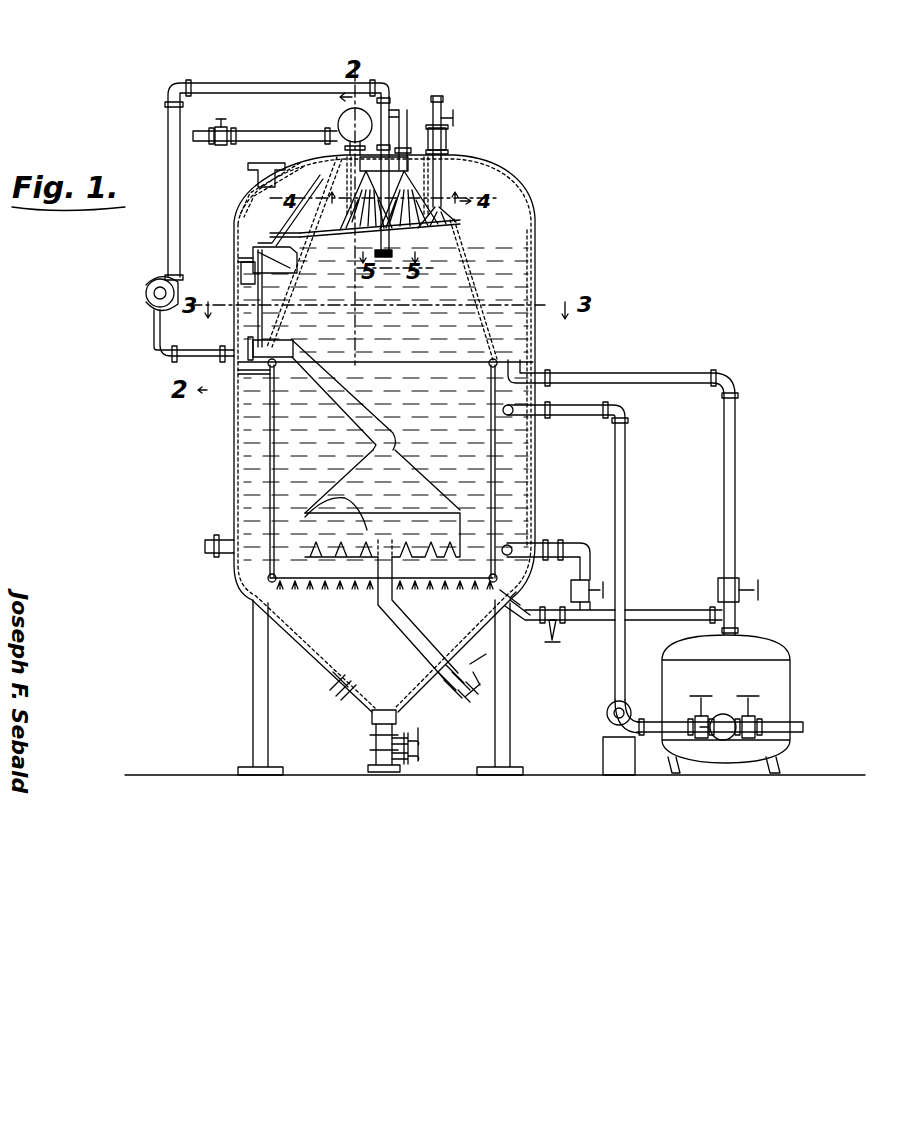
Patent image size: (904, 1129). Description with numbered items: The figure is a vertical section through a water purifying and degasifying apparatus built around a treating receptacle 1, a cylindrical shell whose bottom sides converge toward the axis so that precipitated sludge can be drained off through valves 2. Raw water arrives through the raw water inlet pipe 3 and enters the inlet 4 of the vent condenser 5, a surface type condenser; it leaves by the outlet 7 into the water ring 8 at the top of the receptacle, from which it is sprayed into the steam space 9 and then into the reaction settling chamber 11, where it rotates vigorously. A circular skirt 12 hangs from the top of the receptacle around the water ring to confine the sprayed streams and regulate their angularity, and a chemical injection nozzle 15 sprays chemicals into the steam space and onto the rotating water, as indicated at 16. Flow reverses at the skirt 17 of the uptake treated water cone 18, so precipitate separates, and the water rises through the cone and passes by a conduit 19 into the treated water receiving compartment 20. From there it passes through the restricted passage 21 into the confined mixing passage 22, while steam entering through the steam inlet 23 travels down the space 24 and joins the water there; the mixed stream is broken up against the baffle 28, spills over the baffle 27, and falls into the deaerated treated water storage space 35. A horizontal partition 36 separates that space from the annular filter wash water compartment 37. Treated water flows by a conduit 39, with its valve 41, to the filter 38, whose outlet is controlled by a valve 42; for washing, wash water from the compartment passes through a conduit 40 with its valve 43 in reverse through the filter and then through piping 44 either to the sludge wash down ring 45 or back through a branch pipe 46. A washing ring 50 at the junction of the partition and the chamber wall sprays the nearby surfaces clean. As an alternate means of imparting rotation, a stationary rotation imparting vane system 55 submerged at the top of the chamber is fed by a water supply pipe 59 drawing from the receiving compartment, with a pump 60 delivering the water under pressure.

The treating receptacle 1 is at (222, 524).
The valves 2 is at (372, 740).
The raw water inlet pipe 3 is at (281, 131).
The inlet 4 is at (340, 142).
The vent condenser 5 is at (364, 113).
The outlet 7 is at (390, 108).
The water ring 8 is at (405, 140).
The steam space 9 is at (473, 188).
The reaction settling chamber 11 is at (470, 257).
The circular skirt 12 is at (432, 185).
The chemical injection nozzle 15 is at (448, 136).
The chemical spray 16 is at (447, 227).
The skirt 17 is at (307, 502).
The uptake treated water cone 18 is at (313, 478).
The conduit 19 is at (330, 382).
The treated water receiving compartment 20 is at (235, 332).
The restricted passage 21 is at (245, 273).
The confined mixing passage 22 is at (253, 257).
The steam inlet 23 is at (265, 175).
The space 24 is at (238, 231).
The baffle 27 is at (243, 255).
The baffle 28 is at (293, 223).
The deaerated treated water storage space 35 is at (523, 328).
The horizontal partition 36 is at (240, 374).
The filter wash water compartment 37 is at (245, 445).
The filter 38 is at (780, 675).
The conduit 39 is at (597, 375).
The conduit 40 is at (620, 522).
The valve 41 is at (738, 580).
The valve 42 is at (762, 720).
The valve 43 is at (700, 720).
The piping 44 is at (655, 610).
The sludge wash down ring 45 is at (305, 582).
The branch pipe 46 is at (530, 547).
The washing ring 50 is at (287, 376).
The rotation imparting vane system 55 is at (460, 250).
The water supply pipe 59 is at (438, 98).
The pump 60 is at (150, 283).